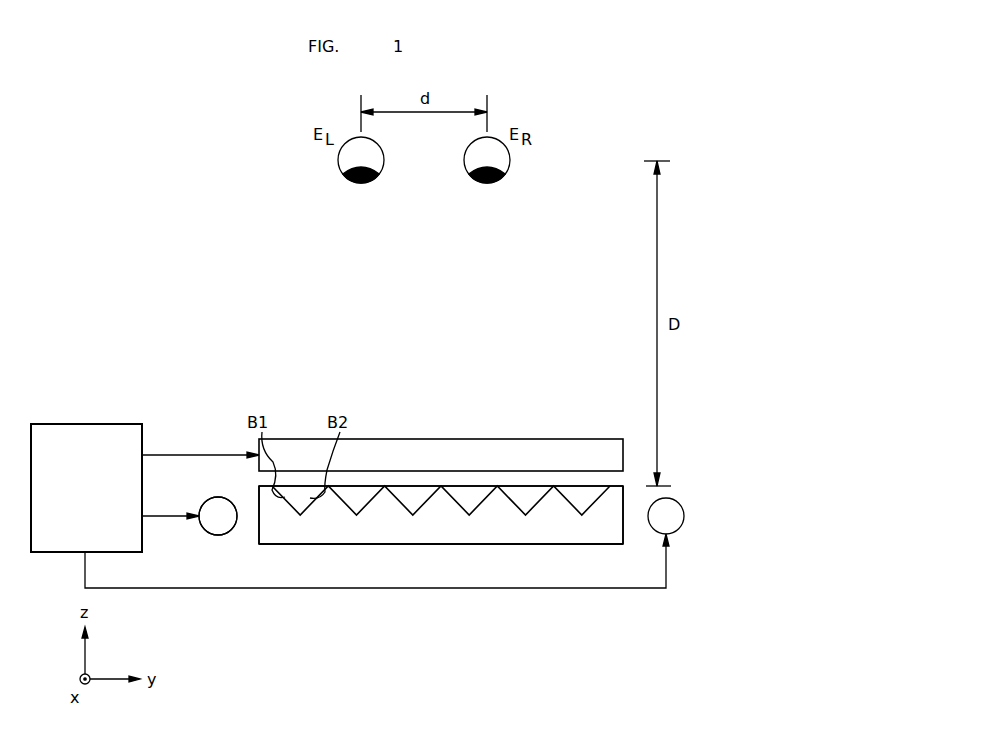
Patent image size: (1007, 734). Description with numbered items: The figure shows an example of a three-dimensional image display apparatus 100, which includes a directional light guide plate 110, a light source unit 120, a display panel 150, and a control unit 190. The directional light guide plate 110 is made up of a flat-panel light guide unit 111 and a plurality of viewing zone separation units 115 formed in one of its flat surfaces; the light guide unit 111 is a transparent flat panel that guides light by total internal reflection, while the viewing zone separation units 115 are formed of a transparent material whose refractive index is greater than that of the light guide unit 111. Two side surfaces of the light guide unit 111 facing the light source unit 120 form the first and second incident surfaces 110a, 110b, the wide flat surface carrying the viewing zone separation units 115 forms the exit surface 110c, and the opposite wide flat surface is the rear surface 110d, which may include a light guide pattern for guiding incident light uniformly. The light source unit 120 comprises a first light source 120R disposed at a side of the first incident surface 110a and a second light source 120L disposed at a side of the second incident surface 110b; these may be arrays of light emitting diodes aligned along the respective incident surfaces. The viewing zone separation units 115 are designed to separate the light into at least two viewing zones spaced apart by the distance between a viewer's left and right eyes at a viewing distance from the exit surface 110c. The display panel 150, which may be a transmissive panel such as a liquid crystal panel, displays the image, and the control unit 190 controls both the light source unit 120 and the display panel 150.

The three-dimensional image display apparatus 100 is at (152, 218).
The control unit 190 is at (107, 424).
The first light source 120R is at (205, 503).
The second light source 120L is at (676, 530).
The light source unit 120 is at (204, 540).
The display panel 150 is at (548, 440).
The directional light guide plate 110 is at (419, 553).
The first incident surface 110a is at (258, 517).
The second incident surface 110b is at (623, 512).
The exit surface 110c is at (595, 485).
The rear surface 110d is at (340, 545).
The light guide unit 111 is at (487, 532).
The viewing zone separation units 115 is at (526, 505).